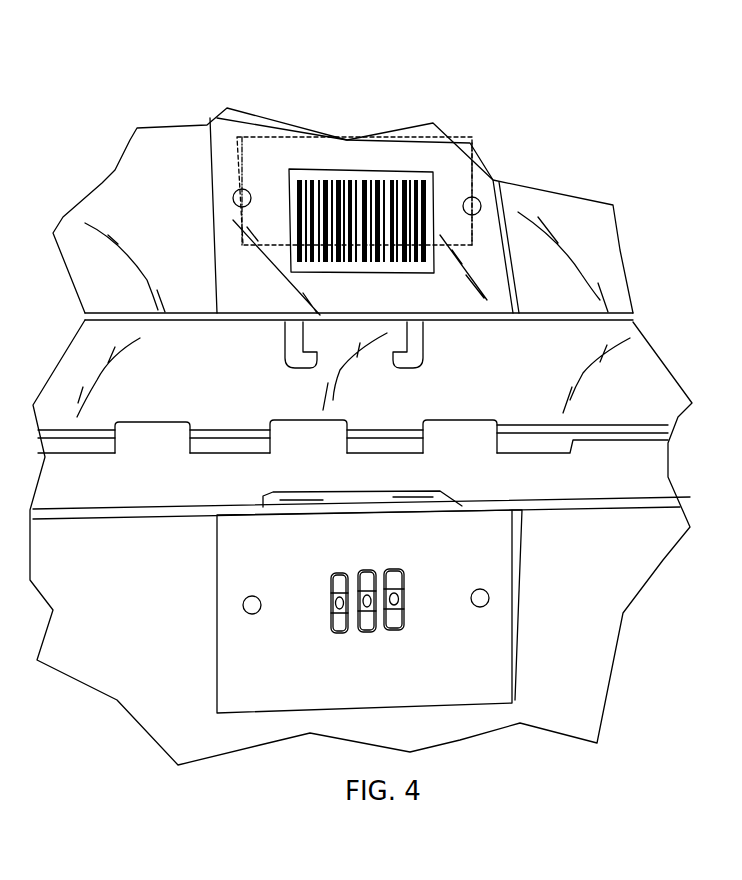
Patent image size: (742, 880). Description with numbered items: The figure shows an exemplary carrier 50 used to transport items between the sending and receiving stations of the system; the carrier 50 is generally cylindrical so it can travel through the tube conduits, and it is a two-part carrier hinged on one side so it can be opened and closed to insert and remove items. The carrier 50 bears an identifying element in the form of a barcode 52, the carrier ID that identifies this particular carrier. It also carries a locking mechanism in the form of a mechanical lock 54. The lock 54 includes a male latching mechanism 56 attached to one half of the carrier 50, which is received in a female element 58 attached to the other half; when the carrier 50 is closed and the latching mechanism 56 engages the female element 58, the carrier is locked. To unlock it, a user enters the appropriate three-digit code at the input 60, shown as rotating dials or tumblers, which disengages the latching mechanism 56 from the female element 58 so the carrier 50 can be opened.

The carrier 50 is at (545, 156).
The barcode 52 is at (318, 165).
The mechanical lock 54 is at (443, 353).
The male latching mechanism 56 is at (285, 337).
The female element 58 is at (283, 497).
The input 60 is at (414, 618).